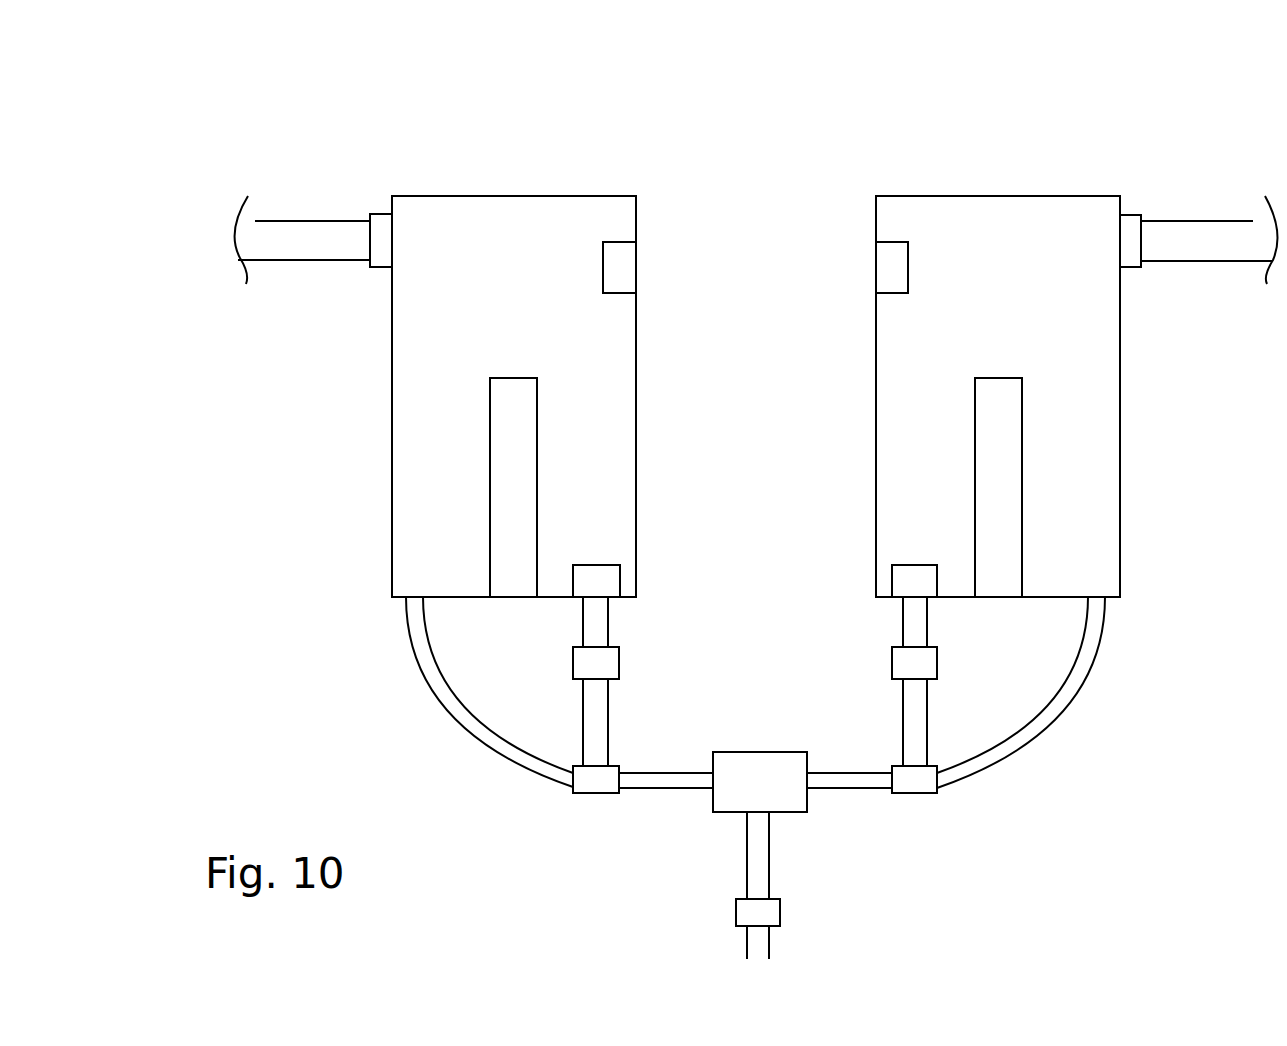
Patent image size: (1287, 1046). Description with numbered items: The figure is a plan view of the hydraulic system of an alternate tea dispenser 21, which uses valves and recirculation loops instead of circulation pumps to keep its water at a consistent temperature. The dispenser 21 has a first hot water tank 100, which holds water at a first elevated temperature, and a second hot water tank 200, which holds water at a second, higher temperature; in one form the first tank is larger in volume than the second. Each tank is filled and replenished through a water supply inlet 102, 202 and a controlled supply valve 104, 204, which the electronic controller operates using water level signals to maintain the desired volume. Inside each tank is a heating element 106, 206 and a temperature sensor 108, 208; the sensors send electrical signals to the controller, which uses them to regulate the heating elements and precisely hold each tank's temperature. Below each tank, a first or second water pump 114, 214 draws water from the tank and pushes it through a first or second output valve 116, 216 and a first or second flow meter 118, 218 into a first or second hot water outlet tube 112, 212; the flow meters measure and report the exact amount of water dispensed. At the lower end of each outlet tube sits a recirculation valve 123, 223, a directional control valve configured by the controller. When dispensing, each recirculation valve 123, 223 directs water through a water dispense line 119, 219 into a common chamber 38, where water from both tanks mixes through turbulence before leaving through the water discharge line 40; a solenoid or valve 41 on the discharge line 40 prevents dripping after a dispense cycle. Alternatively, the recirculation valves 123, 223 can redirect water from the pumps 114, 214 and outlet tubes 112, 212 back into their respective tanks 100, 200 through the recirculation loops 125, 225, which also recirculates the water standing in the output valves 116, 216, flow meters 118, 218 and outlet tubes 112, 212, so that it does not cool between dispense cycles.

The tea dispenser 21 is at (216, 98).
The common chamber 38 is at (745, 752).
The water discharge line 40 is at (760, 875).
The solenoid or valve 41 is at (742, 928).
The first hot water tank 100 is at (568, 213).
The water supply inlet 102 is at (293, 228).
The controlled supply valve 104 is at (382, 230).
The heating element 106 is at (507, 457).
The temperature sensor 108 is at (623, 270).
The first hot water outlet tube 112 is at (593, 709).
The first water pump 114 is at (597, 572).
The first output valve 116 is at (597, 623).
The first flow meter 118 is at (603, 662).
The water dispense line 119 is at (647, 780).
The recirculation valve 123 is at (593, 786).
The recirculation loop 125 is at (438, 690).
The second hot water tank 200 is at (976, 228).
The water supply inlet 202 is at (1206, 232).
The controlled supply valve 204 is at (1126, 233).
The heating element 206 is at (1002, 460).
The temperature sensor 208 is at (888, 277).
The second hot water outlet tube 212 is at (913, 698).
The second water pump 214 is at (907, 577).
The second output valve 216 is at (912, 620).
The second flow meter 218 is at (903, 669).
The water dispense line 219 is at (853, 780).
The recirculation valve 223 is at (903, 790).
The recirculation loop 225 is at (1077, 674).